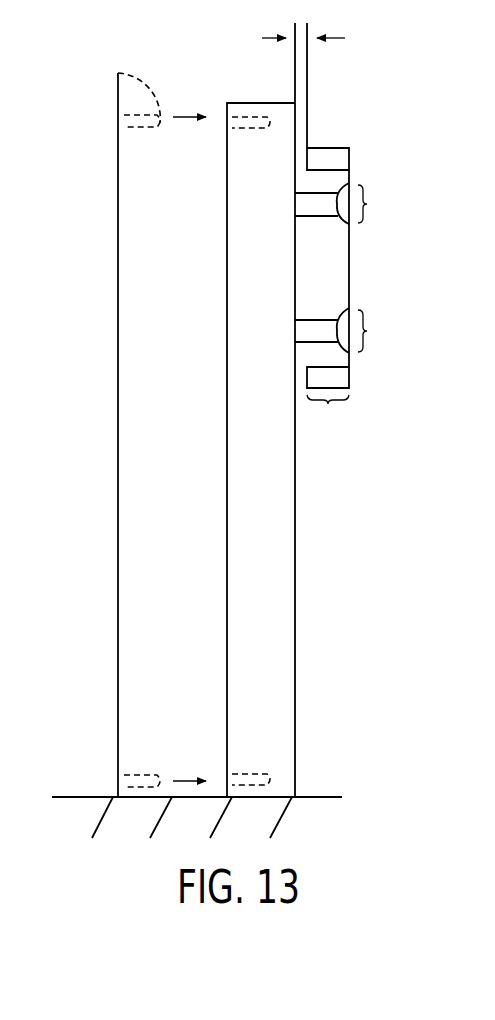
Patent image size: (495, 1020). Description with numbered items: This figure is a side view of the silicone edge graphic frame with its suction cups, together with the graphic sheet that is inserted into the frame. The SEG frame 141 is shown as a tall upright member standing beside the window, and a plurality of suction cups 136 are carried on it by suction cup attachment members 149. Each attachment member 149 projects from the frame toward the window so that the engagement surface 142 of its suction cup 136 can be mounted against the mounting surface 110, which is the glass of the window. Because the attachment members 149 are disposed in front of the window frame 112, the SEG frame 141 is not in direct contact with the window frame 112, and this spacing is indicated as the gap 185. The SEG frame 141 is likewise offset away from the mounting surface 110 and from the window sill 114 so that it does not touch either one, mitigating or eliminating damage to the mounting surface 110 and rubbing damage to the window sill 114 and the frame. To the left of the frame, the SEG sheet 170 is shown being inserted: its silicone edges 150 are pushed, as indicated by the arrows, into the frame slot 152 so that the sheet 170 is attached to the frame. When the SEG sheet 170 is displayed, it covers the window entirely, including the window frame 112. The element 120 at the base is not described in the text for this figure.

The mounting surface 110 is at (350, 245).
The window frame 112 is at (328, 158).
The window sill 114 is at (328, 405).
The ground surface 120 is at (322, 795).
The suction cup 136 is at (345, 181).
The SEG frame 141 is at (280, 563).
The engagement surface 142 is at (381, 268).
The suction cup attachment member 149 is at (305, 330).
The silicone edge 150 is at (118, 98).
The frame slot 152 is at (238, 102).
The SEG sheet 170 is at (118, 452).
The gap 185 is at (332, 38).